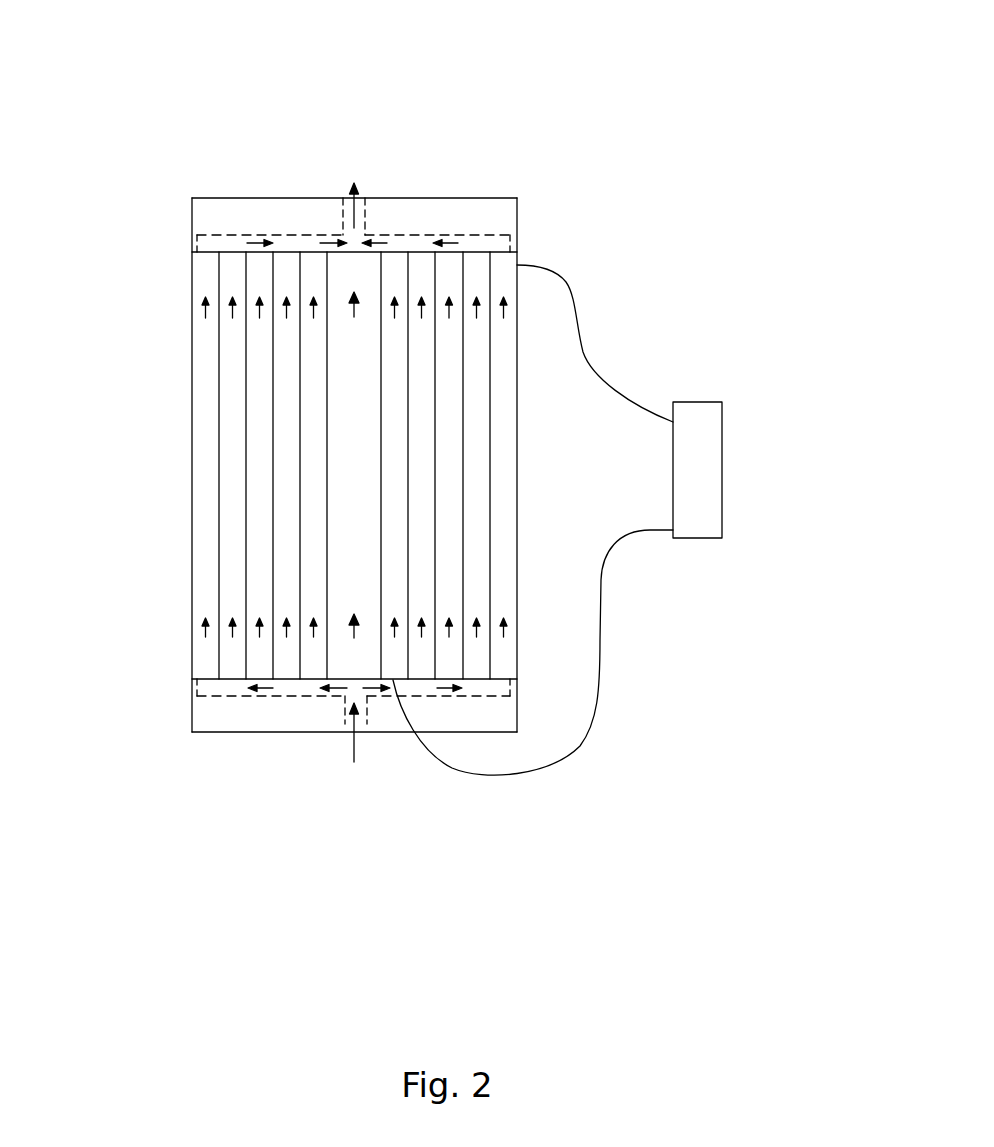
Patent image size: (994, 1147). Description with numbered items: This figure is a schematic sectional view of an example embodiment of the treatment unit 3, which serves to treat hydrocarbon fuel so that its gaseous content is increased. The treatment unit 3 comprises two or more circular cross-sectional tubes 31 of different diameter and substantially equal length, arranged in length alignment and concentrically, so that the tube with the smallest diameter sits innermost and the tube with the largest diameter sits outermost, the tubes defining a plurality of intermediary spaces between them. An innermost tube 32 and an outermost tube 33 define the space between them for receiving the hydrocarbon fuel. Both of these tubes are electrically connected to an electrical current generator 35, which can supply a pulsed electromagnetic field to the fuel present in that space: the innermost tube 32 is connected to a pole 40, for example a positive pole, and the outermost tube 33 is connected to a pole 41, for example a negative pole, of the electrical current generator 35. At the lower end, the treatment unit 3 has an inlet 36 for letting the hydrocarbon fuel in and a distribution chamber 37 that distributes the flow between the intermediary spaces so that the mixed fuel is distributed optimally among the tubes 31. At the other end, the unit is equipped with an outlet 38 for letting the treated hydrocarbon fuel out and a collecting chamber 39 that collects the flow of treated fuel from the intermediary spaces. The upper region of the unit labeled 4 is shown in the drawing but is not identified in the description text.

The treatment unit 3 is at (507, 134).
The upper header 4 is at (455, 222).
The tubes 31 is at (463, 363).
The innermost tube 32 is at (327, 530).
The outermost tube 33 is at (193, 498).
The electrical current generator 35 is at (695, 522).
The inlet 36 is at (353, 718).
The distribution chamber 37 is at (305, 685).
The outlet 38 is at (345, 208).
The collecting chamber 39 is at (400, 245).
The pole 40 is at (570, 755).
The pole 41 is at (605, 373).